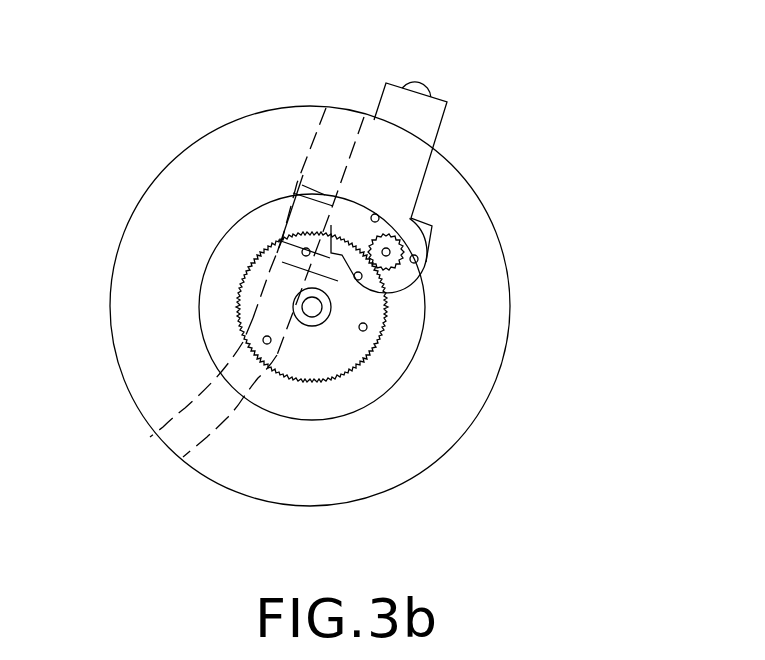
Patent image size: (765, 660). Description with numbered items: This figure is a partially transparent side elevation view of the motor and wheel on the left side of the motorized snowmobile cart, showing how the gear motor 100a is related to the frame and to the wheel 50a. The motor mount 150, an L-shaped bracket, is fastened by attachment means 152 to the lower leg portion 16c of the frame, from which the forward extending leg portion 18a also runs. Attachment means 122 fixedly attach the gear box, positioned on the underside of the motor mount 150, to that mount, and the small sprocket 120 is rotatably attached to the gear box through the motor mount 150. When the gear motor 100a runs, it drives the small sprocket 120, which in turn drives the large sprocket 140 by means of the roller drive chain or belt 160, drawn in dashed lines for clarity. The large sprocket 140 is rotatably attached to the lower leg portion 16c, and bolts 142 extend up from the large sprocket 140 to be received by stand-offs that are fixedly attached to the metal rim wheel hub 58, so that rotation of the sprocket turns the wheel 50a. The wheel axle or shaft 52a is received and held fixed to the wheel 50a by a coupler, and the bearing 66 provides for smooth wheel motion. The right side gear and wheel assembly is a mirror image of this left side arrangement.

The lower leg portion 16c is at (337, 122).
The gear motor 100a is at (448, 109).
The attachment means 152 is at (408, 225).
The attachment means 122 is at (375, 218).
The motor mount 150 is at (430, 224).
The small sprocket 120 is at (390, 249).
The bolts 142 is at (306, 252).
The roller drive chain or belt 160 is at (417, 263).
The large sprocket 140 is at (372, 350).
The forward extending leg portion 18a is at (173, 437).
The metal rim wheel hub 58 is at (340, 395).
The wheel axle or shaft 52a is at (303, 323).
The bearing 66 is at (303, 323).
The wheel 50a is at (276, 505).